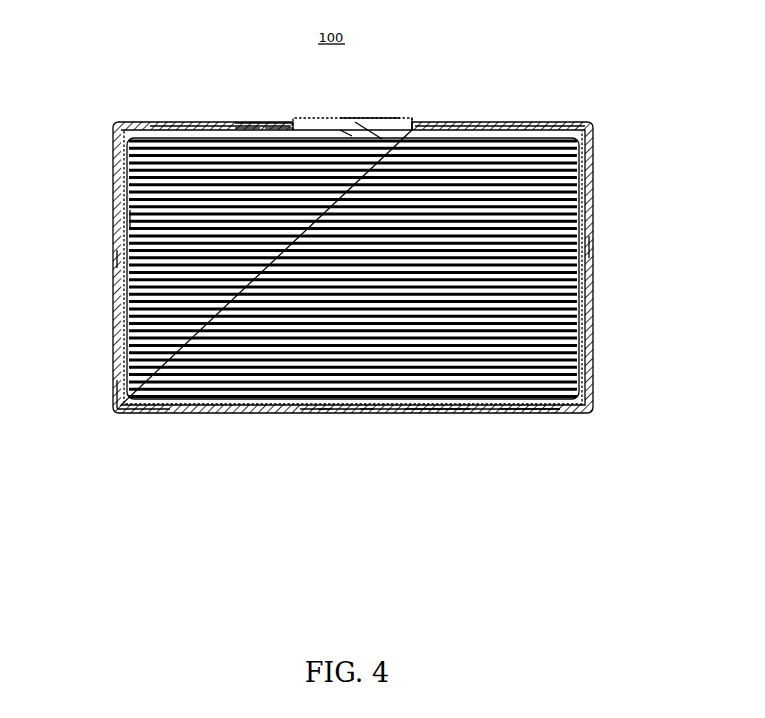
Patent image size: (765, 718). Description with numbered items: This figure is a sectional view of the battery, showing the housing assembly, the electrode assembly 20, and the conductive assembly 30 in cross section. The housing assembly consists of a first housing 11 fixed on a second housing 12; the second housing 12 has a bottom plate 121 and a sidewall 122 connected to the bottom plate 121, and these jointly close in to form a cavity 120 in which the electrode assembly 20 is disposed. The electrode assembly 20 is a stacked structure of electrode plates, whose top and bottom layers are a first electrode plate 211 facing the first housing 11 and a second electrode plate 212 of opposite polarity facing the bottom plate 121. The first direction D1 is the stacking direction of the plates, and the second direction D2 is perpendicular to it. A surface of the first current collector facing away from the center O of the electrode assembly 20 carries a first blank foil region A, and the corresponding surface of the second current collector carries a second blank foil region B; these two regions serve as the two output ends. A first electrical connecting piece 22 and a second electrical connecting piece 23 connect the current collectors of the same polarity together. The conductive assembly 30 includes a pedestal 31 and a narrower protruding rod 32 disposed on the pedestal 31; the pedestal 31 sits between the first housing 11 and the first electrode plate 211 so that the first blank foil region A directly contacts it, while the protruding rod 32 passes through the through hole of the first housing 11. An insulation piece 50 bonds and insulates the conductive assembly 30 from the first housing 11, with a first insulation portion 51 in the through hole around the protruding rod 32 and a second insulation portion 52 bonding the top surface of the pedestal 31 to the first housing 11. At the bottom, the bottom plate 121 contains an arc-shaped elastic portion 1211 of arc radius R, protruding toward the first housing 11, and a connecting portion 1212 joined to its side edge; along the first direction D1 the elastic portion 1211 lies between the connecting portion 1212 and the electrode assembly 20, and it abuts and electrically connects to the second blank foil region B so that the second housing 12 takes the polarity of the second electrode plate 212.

The first housing 11 is at (177, 118).
The second housing 12 is at (596, 320).
The cavity 120 is at (119, 258).
The bottom plate 121 is at (539, 462).
The elastic portion 1211 is at (421, 414).
The connecting portion 1212 is at (533, 417).
The sidewall 122 is at (591, 246).
The electrode assembly 20 is at (124, 180).
The first electrical connecting piece 22 is at (114, 217).
The second electrical connecting piece 23 is at (583, 205).
The first electrode plate 211 is at (521, 137).
The second electrode plate 212 is at (162, 405).
The conductive assembly 30 is at (488, 90).
The pedestal 31 is at (455, 120).
The protruding rod 32 is at (385, 119).
The insulation piece 50 is at (282, 86).
The first insulation portion 51 is at (289, 122).
The second insulation portion 52 is at (251, 120).
The first blank foil region A is at (347, 134).
The center of the electrode assembly O is at (364, 138).
The arc radius R is at (325, 412).
The second blank foil region B is at (366, 411).
The first direction D1 is at (415, 585).
The second direction D2 is at (415, 585).